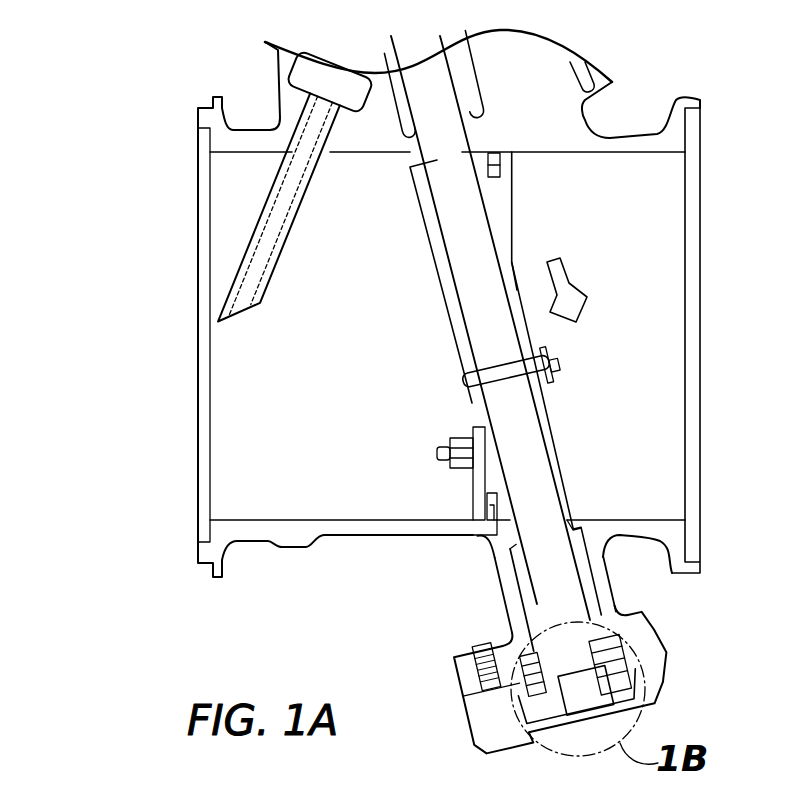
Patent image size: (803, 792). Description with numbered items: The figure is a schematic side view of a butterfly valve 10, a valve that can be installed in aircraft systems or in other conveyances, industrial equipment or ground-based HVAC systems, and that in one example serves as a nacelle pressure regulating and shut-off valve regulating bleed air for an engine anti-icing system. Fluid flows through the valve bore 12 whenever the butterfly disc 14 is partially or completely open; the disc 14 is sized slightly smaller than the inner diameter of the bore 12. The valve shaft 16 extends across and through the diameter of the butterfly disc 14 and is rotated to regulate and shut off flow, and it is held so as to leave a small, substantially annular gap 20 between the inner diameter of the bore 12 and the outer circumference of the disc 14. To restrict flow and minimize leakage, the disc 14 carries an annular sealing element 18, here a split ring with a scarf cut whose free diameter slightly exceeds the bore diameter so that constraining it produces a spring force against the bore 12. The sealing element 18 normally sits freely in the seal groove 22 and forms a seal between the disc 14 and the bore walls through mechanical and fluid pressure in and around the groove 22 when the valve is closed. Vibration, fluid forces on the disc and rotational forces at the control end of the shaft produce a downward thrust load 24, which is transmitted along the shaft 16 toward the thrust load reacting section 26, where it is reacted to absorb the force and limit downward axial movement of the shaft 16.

The butterfly valve 10 is at (168, 69).
The valve bore 12 is at (247, 197).
The butterfly disc 14 is at (495, 208).
The valve shaft 16 is at (423, 82).
The sealing element 18 is at (508, 522).
The gap 20 is at (508, 522).
The seal groove 22 is at (477, 487).
The thrust load 24 is at (570, 280).
The thrust load reacting section 26 is at (668, 652).